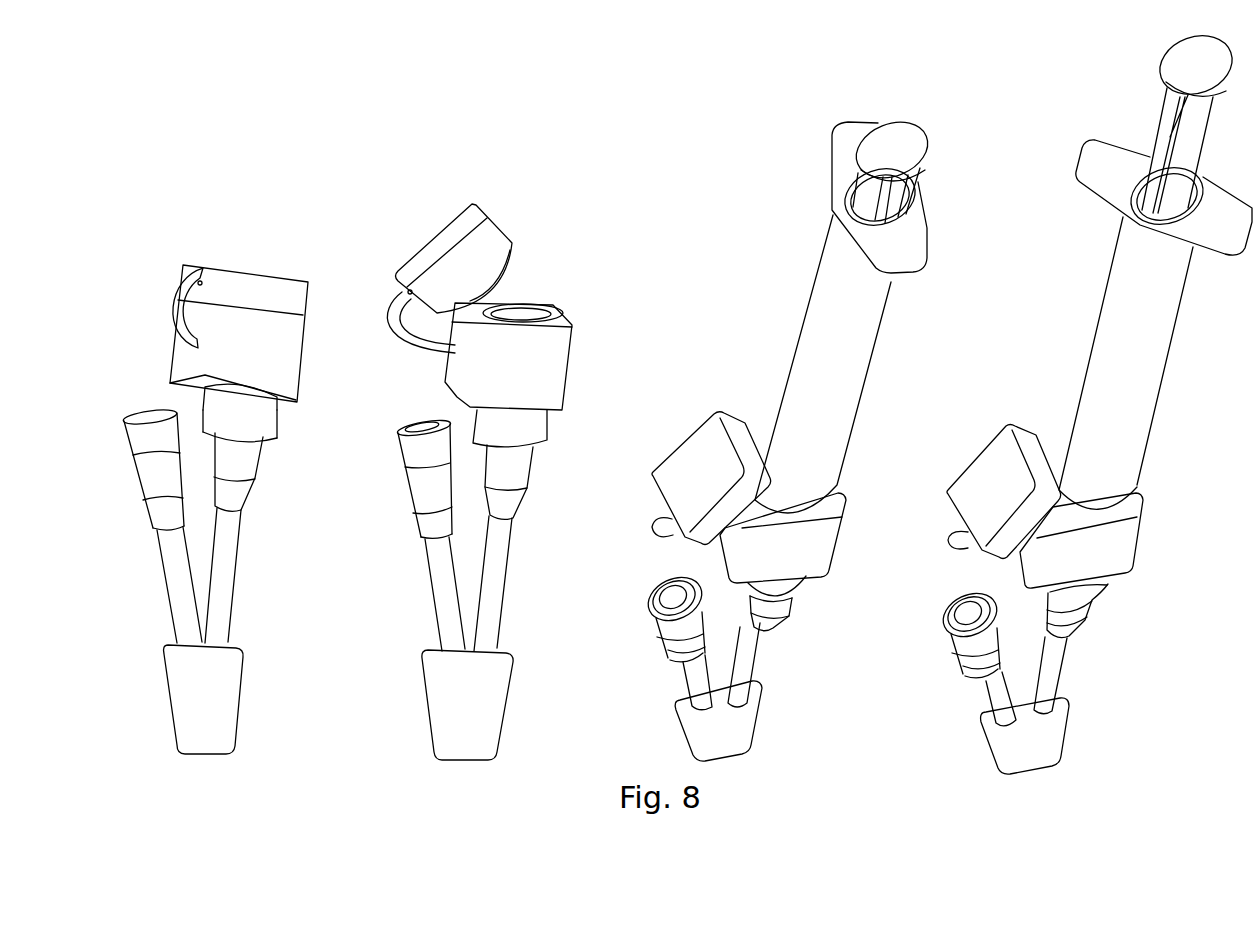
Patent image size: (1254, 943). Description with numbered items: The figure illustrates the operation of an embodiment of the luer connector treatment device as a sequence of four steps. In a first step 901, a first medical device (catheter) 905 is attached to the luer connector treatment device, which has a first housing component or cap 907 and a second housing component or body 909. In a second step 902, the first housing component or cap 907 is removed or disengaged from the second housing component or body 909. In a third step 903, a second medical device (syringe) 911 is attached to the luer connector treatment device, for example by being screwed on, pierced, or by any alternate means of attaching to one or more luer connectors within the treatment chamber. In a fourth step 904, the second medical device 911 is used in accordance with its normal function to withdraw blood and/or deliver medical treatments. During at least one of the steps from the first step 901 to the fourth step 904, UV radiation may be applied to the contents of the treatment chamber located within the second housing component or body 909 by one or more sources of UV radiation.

The first step 901 is at (156, 186).
The second step 902 is at (378, 186).
The third step 903 is at (735, 149).
The fourth step 904 is at (1038, 120).
The first medical device (catheter) 905 is at (257, 468).
The first housing component or cap 907 is at (262, 256).
The second housing component or body 909 is at (302, 358).
The second medical device (syringe) 911 is at (813, 300).